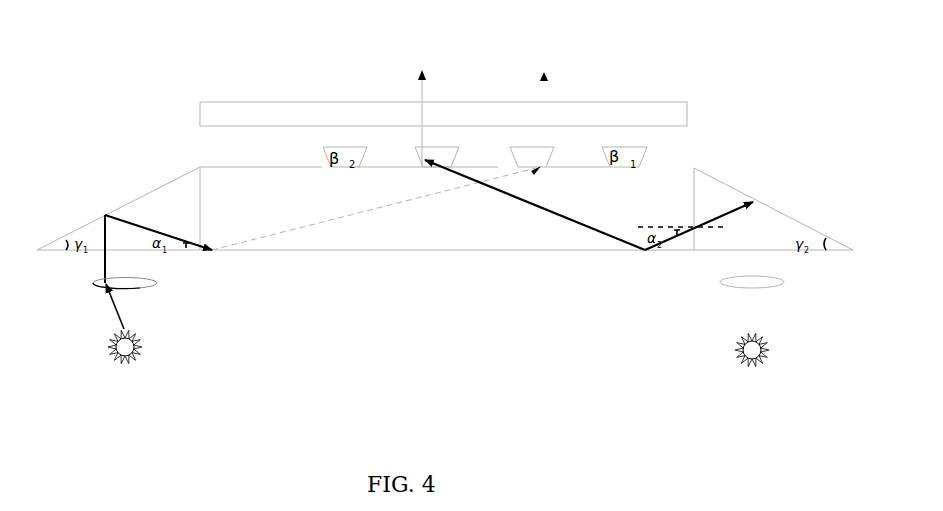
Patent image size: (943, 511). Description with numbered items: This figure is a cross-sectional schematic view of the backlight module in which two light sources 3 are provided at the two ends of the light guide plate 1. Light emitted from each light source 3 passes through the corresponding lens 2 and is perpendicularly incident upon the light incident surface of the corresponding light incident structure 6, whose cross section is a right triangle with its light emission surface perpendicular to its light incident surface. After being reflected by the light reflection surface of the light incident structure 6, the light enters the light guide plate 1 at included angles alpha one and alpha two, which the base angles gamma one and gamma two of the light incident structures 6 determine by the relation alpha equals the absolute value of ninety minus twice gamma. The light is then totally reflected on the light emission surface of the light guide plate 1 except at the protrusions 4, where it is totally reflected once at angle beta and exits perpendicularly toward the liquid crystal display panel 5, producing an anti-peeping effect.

The light guide plate 1 is at (296, 170).
The lens 2 is at (157, 287).
The light source 3 is at (137, 362).
The protrusion 4 is at (362, 155).
The liquid crystal display panel 5 is at (392, 113).
The light incident structure 6 is at (186, 183).